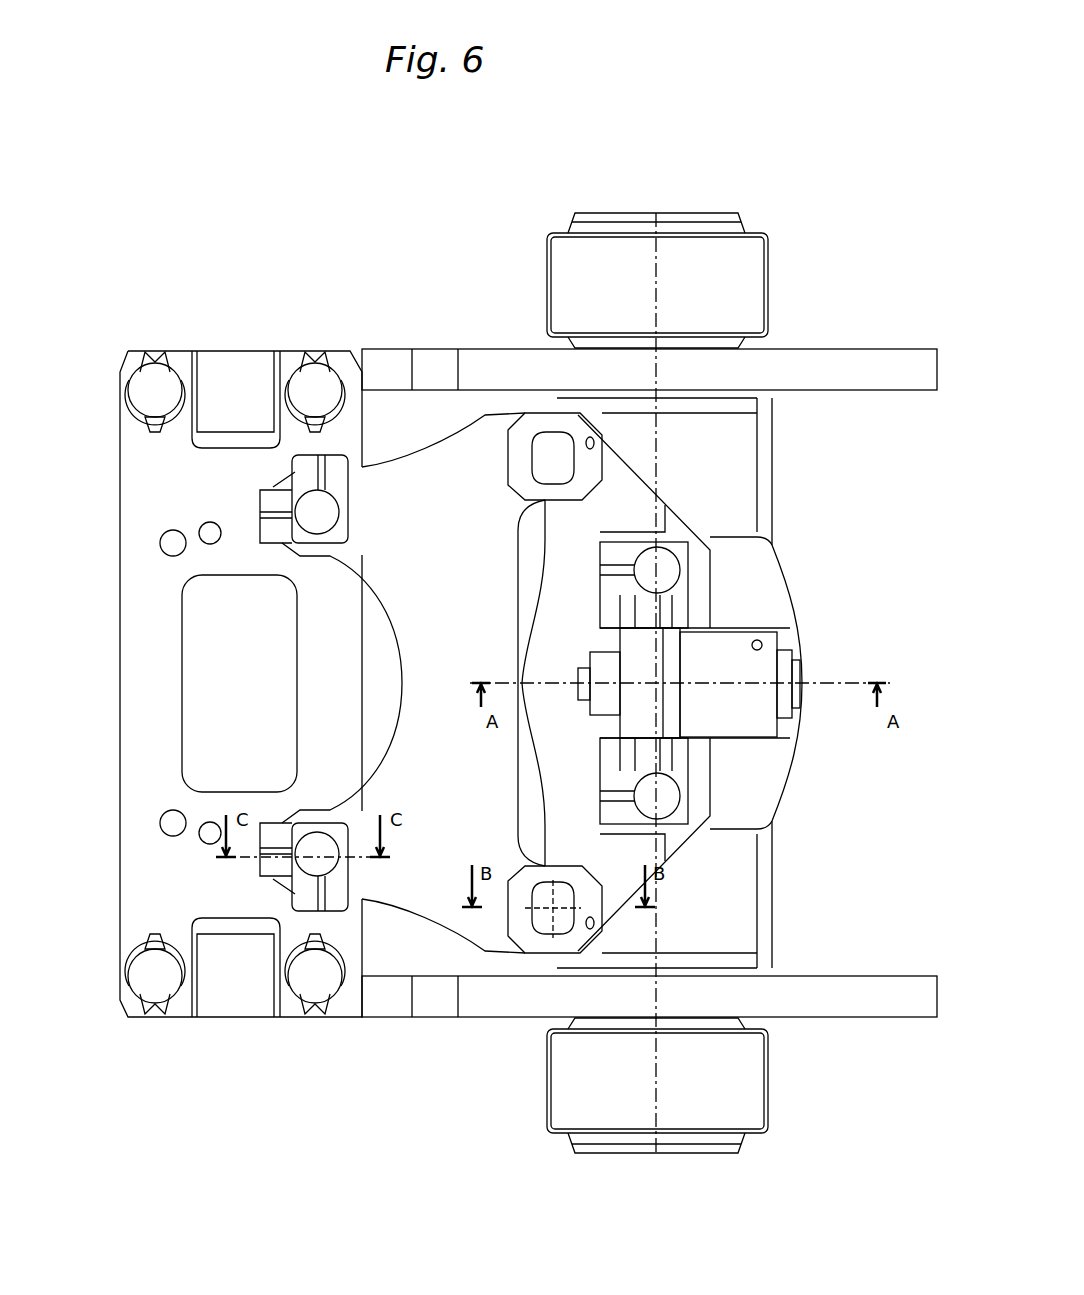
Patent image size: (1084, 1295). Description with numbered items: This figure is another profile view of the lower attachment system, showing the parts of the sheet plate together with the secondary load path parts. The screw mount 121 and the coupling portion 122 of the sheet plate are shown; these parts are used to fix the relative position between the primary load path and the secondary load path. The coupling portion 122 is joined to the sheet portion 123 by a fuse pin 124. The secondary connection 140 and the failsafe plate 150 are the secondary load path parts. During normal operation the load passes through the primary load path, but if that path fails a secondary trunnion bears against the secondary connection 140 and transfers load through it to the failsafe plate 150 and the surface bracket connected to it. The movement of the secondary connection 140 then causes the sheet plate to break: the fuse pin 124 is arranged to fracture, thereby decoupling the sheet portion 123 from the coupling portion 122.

The screw mount 121 is at (735, 657).
The coupling portion 122 is at (647, 507).
The sheet portion 123 is at (475, 457).
The fuse pin 124 is at (542, 920).
The secondary connection 140 is at (147, 490).
The failsafe plate 150 is at (862, 372).